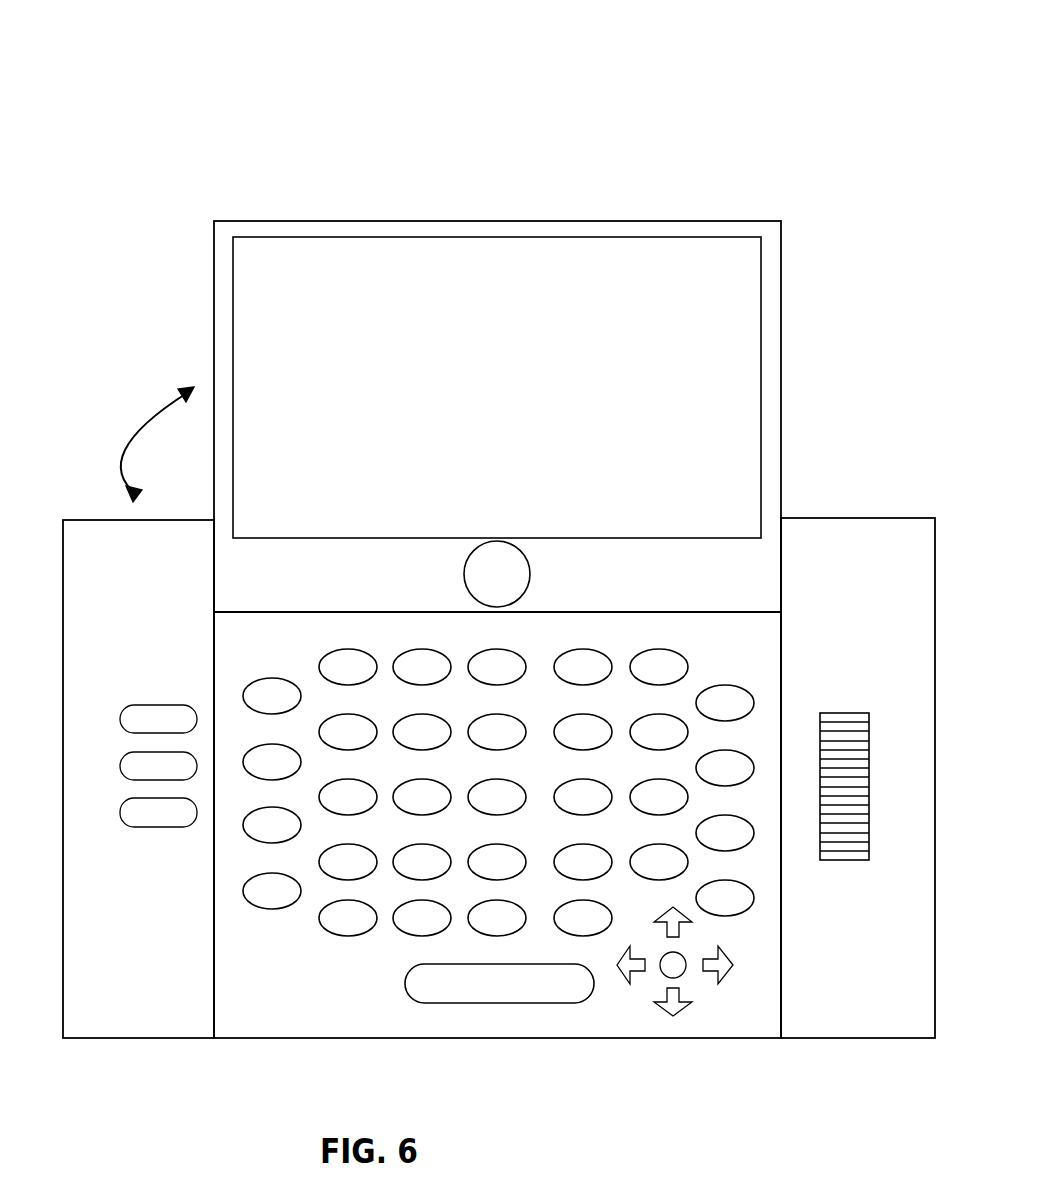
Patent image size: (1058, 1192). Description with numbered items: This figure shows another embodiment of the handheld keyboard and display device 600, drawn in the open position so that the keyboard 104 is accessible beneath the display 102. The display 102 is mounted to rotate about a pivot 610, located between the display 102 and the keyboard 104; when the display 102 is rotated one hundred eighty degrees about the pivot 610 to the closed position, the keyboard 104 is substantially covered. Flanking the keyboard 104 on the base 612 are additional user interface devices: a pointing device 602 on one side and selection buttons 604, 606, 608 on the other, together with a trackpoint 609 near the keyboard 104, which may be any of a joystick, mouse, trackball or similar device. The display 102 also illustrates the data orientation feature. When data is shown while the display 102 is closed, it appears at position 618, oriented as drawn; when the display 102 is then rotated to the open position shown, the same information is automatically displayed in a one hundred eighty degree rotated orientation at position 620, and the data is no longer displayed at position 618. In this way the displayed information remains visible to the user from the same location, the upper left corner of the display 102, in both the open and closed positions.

The portable electronic device 600 is at (427, 58).
The display 102 is at (472, 260).
The keyboard 104 is at (603, 947).
The pointing device 602 is at (866, 718).
The selection button 604 is at (145, 715).
The selection button 606 is at (122, 766).
The selection button 608 is at (120, 817).
The trackpoint 609 is at (695, 983).
The pivot 610 is at (497, 573).
The base housing 612 is at (847, 1040).
The data position in closed position 618 is at (703, 490).
The data position in open position 620 is at (317, 255).